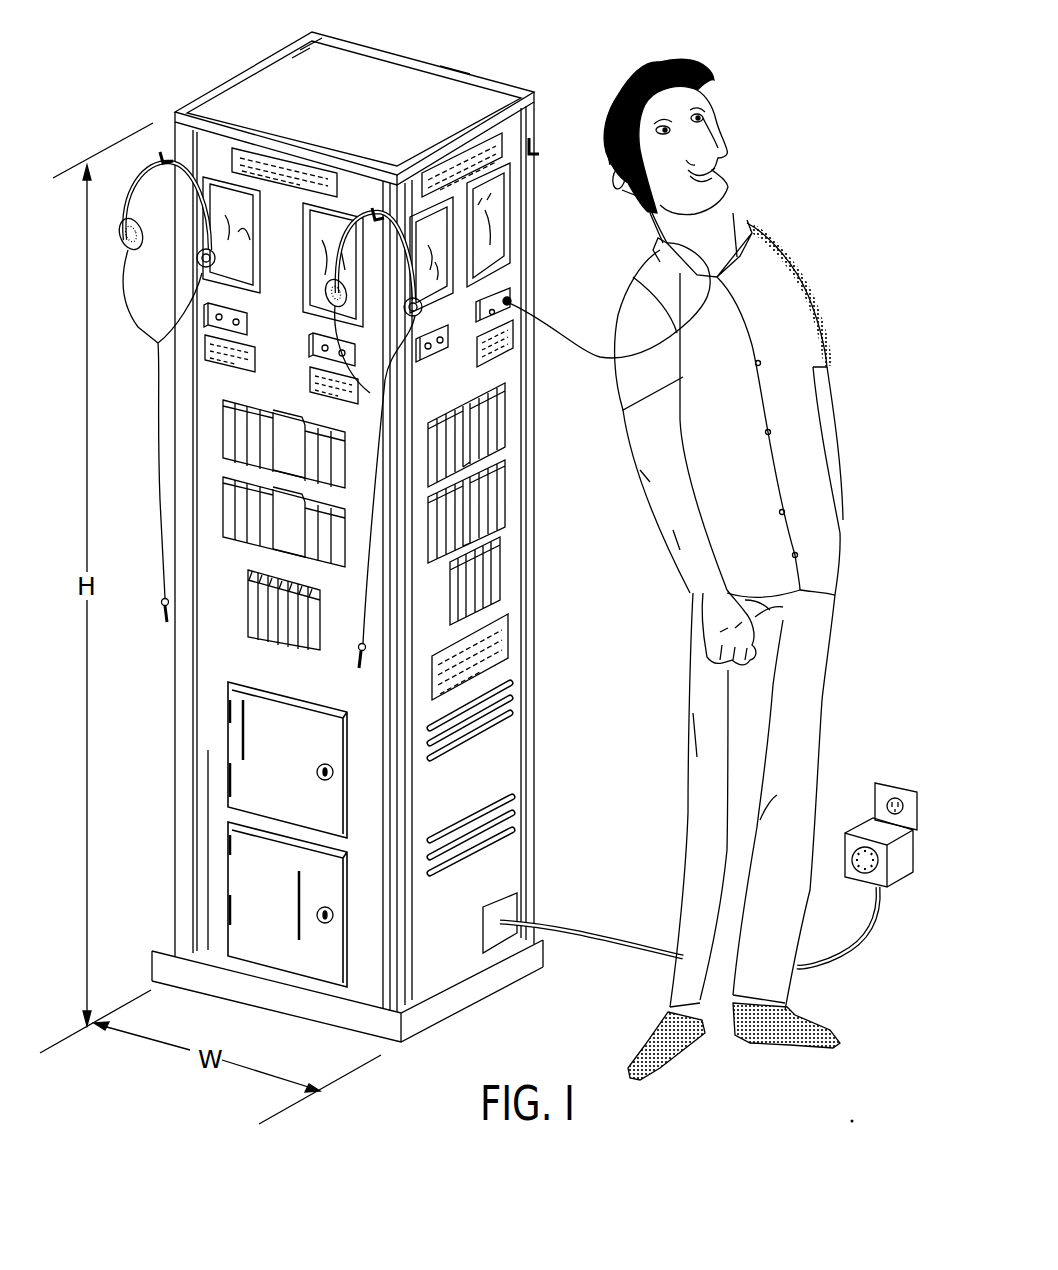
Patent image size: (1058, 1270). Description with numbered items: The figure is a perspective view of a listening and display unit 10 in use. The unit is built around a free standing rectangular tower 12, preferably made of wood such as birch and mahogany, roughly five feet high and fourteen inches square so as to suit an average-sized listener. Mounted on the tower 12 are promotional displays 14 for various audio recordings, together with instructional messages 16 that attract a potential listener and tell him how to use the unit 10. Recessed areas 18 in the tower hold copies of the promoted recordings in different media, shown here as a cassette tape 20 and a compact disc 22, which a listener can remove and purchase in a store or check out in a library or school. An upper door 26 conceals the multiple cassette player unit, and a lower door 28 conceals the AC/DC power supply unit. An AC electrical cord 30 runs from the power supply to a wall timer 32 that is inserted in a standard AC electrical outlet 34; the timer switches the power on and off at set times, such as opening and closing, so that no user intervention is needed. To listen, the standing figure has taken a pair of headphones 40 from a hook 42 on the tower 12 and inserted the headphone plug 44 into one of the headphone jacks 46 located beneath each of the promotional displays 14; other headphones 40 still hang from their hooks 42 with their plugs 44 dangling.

The listening and display unit 10 is at (531, 60).
The free standing rectangular tower 12 is at (228, 95).
The promotional displays 14 is at (254, 222).
The instructional messages 16 is at (337, 182).
The recessed areas 18 is at (298, 426).
The cassette tape 20 is at (240, 406).
The compact disc 22 is at (254, 610).
The upper door 26 is at (287, 772).
The lower door 28 is at (274, 895).
The AC electrical cord 30 is at (598, 930).
The wall timer 32 is at (858, 828).
The AC electrical outlet 34 is at (893, 790).
The headphones 40 is at (123, 228).
The hook 42 is at (158, 158).
The headphone plug 44 is at (160, 598).
The headphone jacks 46 is at (248, 318).